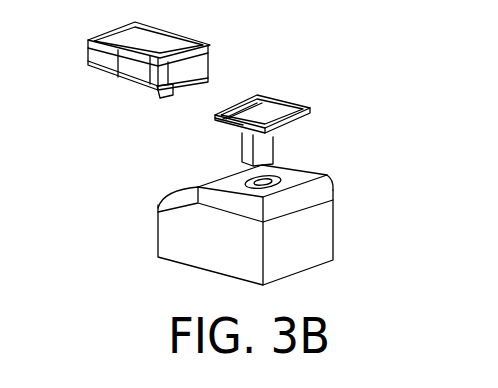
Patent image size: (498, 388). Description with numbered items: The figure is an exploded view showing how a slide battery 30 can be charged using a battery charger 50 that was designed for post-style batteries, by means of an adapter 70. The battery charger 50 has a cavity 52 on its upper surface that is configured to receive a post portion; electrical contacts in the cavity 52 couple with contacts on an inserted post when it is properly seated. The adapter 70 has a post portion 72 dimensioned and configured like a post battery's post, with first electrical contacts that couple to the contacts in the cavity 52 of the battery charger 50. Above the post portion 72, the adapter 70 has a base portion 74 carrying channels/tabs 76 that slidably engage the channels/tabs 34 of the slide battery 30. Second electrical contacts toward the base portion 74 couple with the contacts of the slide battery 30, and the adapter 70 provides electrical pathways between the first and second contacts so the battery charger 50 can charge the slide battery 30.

The slide battery 30 is at (214, 42).
The channels/tabs 34 is at (138, 95).
The battery charger 50 is at (273, 221).
The cavity 52 is at (252, 176).
The adapter 70 is at (277, 108).
The post portion 72 is at (278, 156).
The base portion 74 is at (228, 123).
The channels/tabs 76 is at (282, 102).